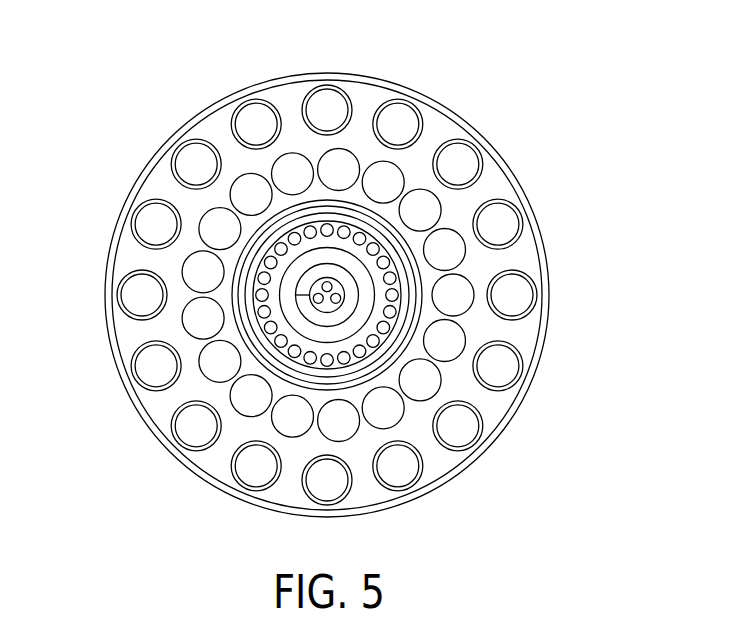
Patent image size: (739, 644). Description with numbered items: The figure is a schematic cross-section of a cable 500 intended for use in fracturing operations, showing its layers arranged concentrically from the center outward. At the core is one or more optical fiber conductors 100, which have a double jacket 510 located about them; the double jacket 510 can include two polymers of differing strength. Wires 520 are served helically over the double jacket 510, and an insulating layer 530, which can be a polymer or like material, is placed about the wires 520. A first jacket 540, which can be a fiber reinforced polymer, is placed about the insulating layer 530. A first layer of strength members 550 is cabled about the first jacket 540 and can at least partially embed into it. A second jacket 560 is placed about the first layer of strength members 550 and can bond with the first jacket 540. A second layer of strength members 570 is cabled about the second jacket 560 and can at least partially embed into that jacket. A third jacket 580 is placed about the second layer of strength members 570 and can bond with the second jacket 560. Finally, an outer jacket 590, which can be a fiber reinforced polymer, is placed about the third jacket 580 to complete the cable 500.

The cable 500 is at (110, 45).
The outer jacket 590 is at (322, 74).
The third jacket 580 is at (207, 122).
The second layer of strength members 570 is at (183, 157).
The second jacket 560 is at (170, 262).
The first layer of strength members 550 is at (188, 317).
The first jacket 540 is at (249, 362).
The insulating layer 530 is at (315, 378).
The wires 520 is at (355, 382).
The double jacket 510 is at (363, 295).
The optical fiber conductor 100 is at (350, 283).